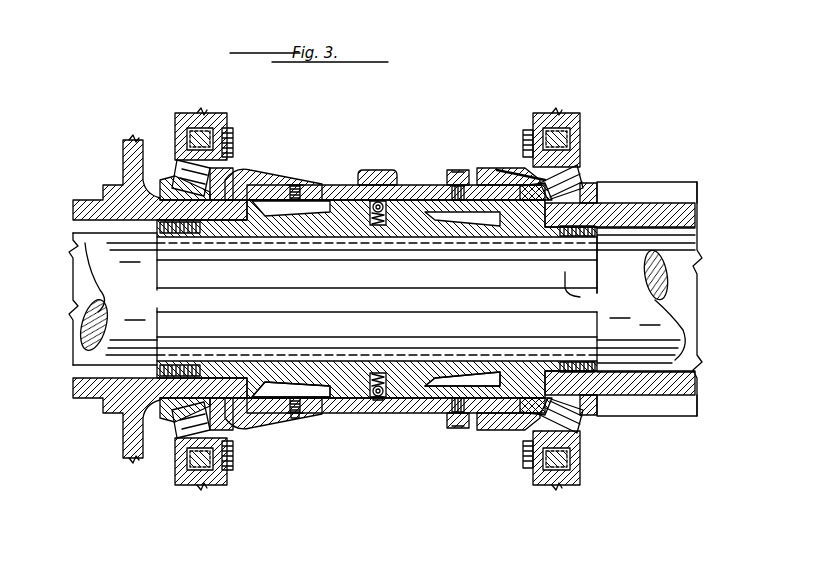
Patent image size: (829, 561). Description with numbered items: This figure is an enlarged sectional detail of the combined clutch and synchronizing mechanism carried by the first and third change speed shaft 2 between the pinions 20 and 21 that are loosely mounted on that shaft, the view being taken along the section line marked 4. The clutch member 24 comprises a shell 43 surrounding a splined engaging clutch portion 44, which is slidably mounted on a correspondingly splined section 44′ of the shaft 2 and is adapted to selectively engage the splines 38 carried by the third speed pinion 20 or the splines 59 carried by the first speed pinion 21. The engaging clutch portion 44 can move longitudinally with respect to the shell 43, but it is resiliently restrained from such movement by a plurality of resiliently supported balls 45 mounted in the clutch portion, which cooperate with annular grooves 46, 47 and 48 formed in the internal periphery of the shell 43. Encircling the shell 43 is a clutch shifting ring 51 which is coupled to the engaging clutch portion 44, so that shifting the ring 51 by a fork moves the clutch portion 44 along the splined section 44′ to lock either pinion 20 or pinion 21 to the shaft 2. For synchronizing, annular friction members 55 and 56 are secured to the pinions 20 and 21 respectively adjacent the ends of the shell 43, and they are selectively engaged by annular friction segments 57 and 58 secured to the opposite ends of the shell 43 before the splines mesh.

The first and third change speed shaft 2 is at (650, 266).
The section line 4- 4 is at (377, 480).
The pinion 20 is at (127, 156).
The pinion 21 is at (658, 198).
The clutch member 24 is at (412, 412).
The splines 38 is at (170, 368).
The shell 43 is at (398, 200).
The splined engaging clutch portion 44 is at (400, 230).
The splined section 44′ is at (580, 297).
The resiliently supported balls 45 is at (383, 187).
The annular groove 46 is at (383, 405).
The annular groove 47 is at (415, 405).
The annular groove 48 is at (335, 413).
The clutch shifting ring 51 is at (372, 172).
The annular friction member 55 is at (236, 182).
The annular friction member 56 is at (497, 172).
The annular friction segment 57 is at (278, 178).
The annular friction segment 58 is at (500, 176).
The splines 59 is at (582, 372).